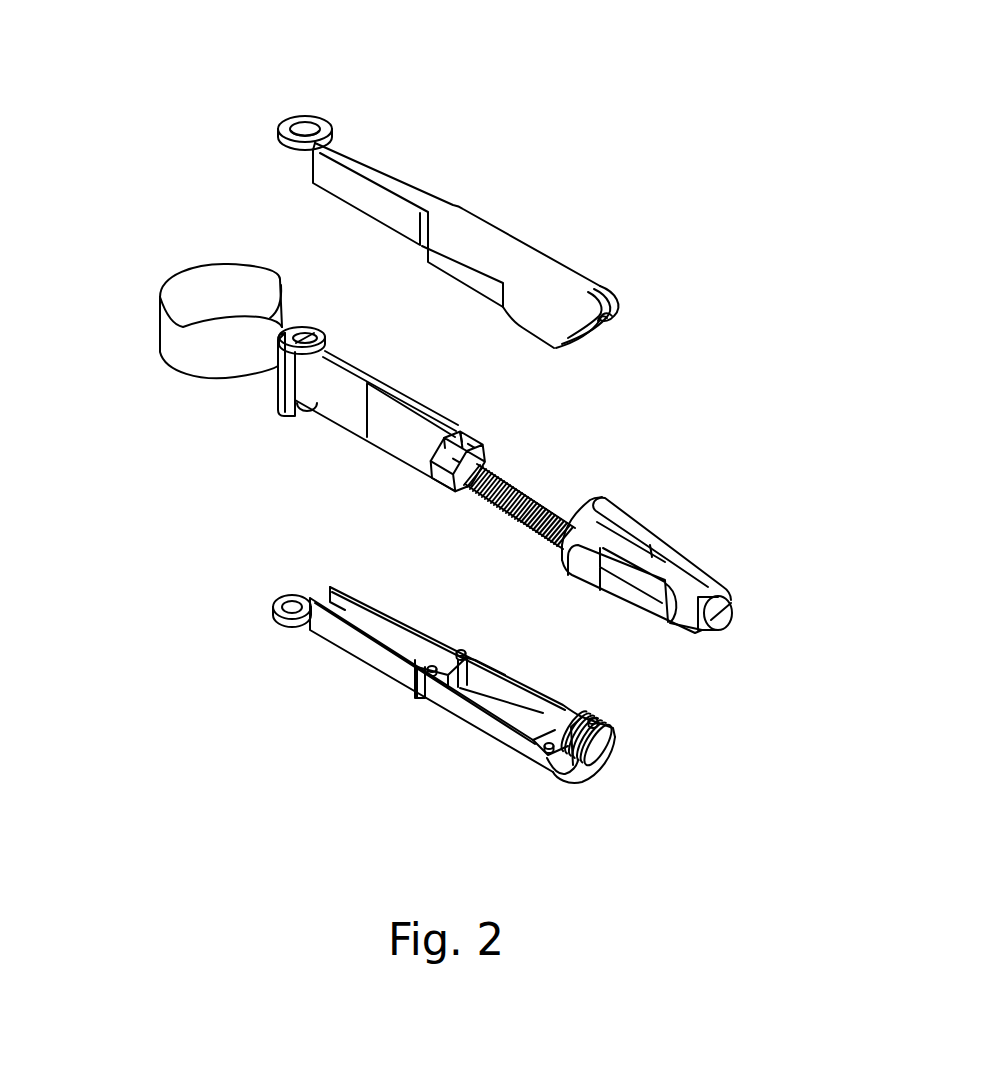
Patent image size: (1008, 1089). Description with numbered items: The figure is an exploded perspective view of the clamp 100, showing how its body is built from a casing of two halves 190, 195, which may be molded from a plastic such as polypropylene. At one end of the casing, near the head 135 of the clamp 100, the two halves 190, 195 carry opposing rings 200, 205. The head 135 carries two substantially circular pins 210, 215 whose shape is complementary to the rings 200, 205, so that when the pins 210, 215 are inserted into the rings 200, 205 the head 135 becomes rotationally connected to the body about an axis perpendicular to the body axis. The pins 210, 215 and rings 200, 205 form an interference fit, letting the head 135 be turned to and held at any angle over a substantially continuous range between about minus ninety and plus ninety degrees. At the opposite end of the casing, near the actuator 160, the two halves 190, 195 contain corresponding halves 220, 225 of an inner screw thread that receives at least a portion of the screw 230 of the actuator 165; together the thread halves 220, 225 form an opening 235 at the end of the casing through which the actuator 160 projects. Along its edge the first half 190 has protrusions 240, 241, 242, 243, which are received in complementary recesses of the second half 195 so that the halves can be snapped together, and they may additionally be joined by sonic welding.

The clamp 100 is at (140, 114).
The head 135 is at (278, 400).
The actuator 160 is at (657, 587).
The actuator 165 is at (645, 600).
The first half of the casing 190 is at (417, 708).
The second half of the casing 195 is at (507, 240).
The ring 200 is at (288, 622).
The ring 205 is at (316, 116).
The pin 210 is at (307, 417).
The pin 215 is at (308, 338).
The half of the inner screw thread 220 is at (584, 770).
The half of the inner screw thread 225 is at (607, 316).
The screw 230 is at (538, 490).
The opening 235 is at (596, 326).
The protrusion 240 is at (428, 672).
The protrusion 241 is at (460, 650).
The protrusion 242 is at (593, 718).
The protrusion 243 is at (546, 749).